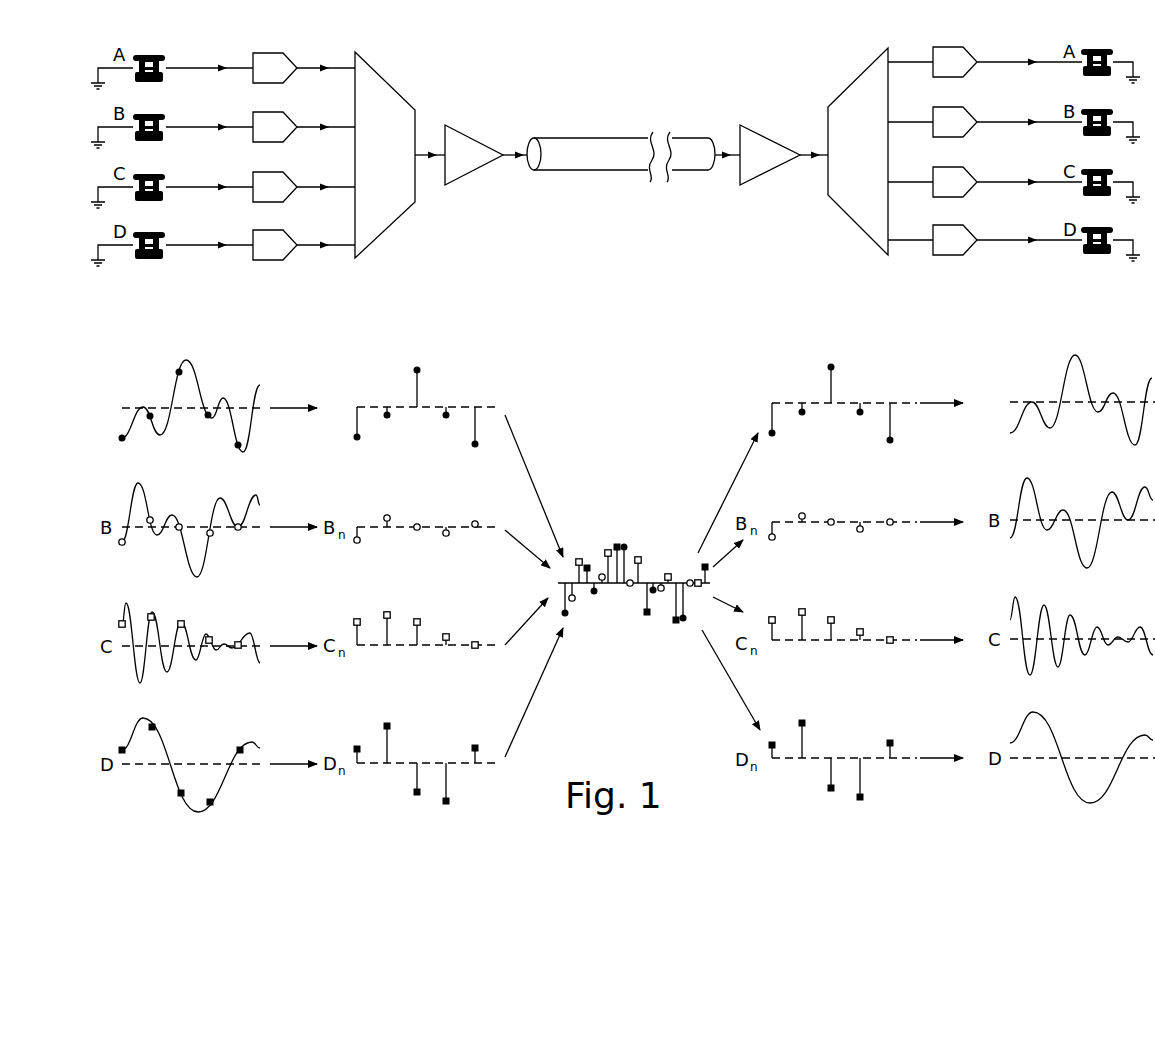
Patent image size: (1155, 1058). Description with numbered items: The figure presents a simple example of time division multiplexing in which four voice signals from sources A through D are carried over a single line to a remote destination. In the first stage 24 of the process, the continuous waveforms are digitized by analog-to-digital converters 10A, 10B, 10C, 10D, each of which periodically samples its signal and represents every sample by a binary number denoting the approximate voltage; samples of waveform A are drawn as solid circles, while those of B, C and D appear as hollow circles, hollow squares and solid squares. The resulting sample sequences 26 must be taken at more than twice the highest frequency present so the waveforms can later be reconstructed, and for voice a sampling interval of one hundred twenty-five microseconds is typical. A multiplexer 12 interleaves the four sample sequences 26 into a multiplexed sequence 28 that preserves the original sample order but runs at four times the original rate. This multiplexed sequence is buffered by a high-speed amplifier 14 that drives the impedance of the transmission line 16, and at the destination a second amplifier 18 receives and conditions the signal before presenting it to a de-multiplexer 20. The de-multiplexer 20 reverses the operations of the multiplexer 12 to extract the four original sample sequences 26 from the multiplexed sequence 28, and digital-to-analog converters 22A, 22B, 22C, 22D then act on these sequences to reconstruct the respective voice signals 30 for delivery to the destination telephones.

The analog-to-digital converter 10A is at (275, 68).
The analog-to-digital converter 10B is at (275, 127).
The analog-to-digital converter 10C is at (275, 187).
The analog-to-digital converter 10D is at (275, 245).
The multiplexer 12 is at (385, 155).
The transmit amplifier 14 is at (474, 155).
The transmission line 16 is at (621, 157).
The receive amplifier 18 is at (770, 155).
The de-multiplexer 20 is at (858, 151).
The digital-to-analog converter 22A is at (955, 62).
The digital-to-analog converter 22B is at (955, 122).
The digital-to-analog converter 22C is at (955, 182).
The digital-to-analog converter 22D is at (955, 240).
The first stage 24 is at (174, 348).
The sample sequences 26 is at (413, 346).
The multiplexed sequence 28 is at (604, 523).
The voice signals 30 is at (1065, 339).